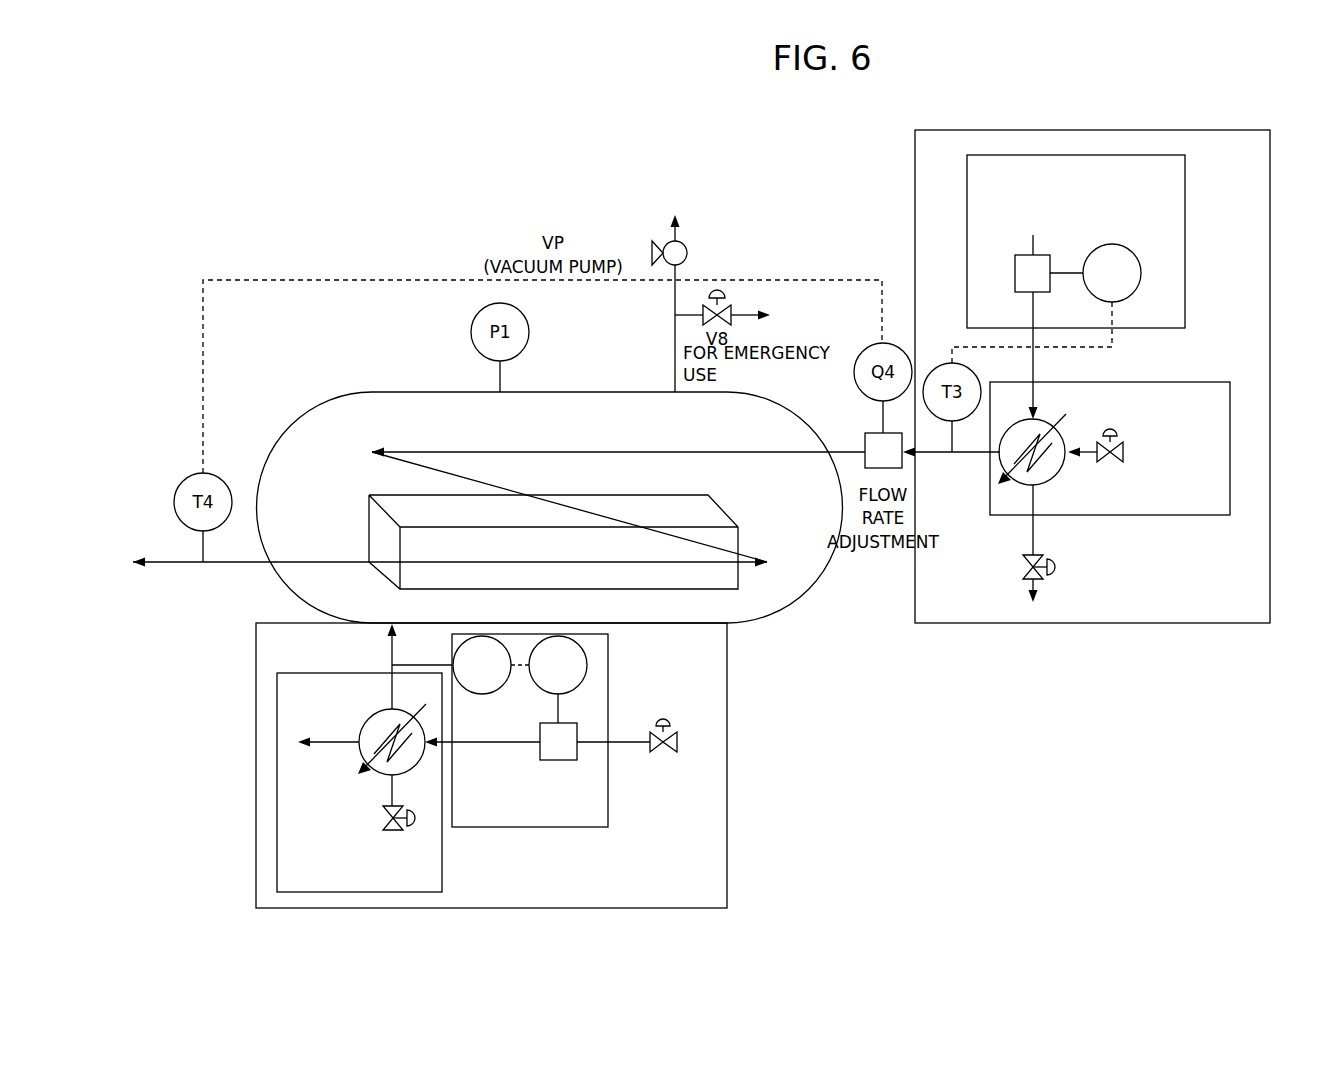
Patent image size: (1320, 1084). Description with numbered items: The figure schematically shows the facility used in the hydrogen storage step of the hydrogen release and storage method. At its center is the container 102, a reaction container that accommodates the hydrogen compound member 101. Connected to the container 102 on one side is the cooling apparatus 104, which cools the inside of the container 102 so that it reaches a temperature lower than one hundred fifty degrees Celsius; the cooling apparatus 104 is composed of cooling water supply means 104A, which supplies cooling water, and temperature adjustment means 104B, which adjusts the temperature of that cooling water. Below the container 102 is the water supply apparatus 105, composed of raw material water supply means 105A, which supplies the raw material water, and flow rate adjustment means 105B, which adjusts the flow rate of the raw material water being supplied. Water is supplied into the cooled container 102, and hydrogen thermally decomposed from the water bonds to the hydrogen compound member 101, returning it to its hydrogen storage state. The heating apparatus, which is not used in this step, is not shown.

The hydrogen compound member 101 is at (655, 590).
The container 102 is at (403, 391).
The cooling apparatus 104 is at (1100, 623).
The cooling water supply means 104A is at (1203, 382).
The temperature adjustment means 104B is at (1037, 155).
The water supply apparatus 105 is at (727, 848).
The raw material water supply means 105A is at (277, 775).
The flow rate adjustment means 105B is at (531, 827).